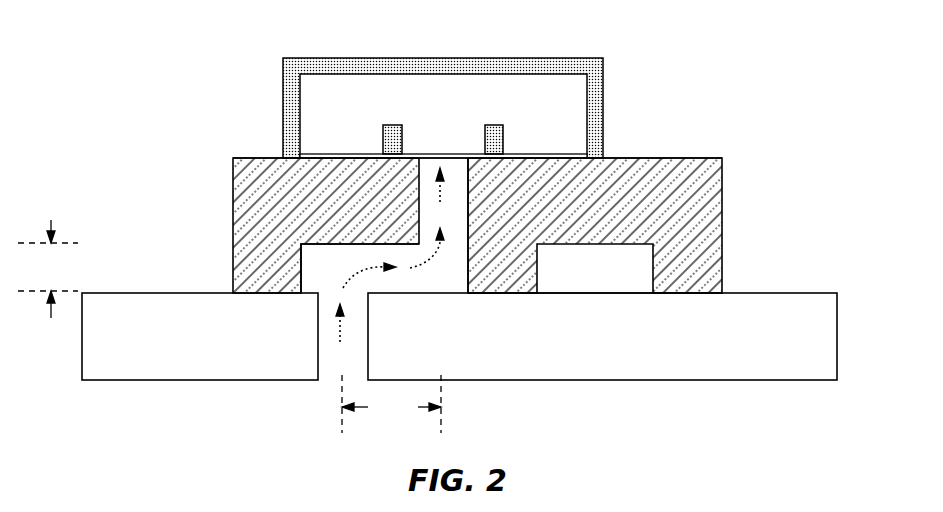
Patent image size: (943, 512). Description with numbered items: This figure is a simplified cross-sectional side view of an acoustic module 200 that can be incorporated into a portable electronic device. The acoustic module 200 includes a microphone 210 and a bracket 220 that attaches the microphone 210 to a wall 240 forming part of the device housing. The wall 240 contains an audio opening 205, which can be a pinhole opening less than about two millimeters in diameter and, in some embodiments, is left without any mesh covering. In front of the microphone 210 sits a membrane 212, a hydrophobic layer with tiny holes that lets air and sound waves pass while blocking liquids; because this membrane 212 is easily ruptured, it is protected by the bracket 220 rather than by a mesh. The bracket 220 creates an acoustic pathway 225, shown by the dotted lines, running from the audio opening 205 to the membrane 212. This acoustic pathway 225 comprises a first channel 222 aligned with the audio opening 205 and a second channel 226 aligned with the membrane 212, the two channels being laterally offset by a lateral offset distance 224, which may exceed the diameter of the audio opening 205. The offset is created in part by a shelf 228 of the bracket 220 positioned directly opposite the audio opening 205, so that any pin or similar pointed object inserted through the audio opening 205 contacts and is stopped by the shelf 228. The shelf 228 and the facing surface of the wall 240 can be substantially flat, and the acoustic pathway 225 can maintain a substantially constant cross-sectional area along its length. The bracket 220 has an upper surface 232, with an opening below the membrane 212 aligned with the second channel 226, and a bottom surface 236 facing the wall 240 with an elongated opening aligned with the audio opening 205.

The acoustic module 200 is at (437, 216).
The audio opening 205 is at (328, 370).
The microphone 210 is at (458, 79).
The membrane 212 is at (443, 125).
The bracket 220 is at (483, 226).
The first channel 222 is at (380, 318).
The lateral offset distance 224 is at (391, 404).
The acoustic pathway 225 is at (464, 251).
The second channel 226 is at (529, 246).
The shelf 228 is at (320, 256).
The upper surface 232 is at (489, 128).
The bottom surface 236 is at (617, 323).
The wall 240 is at (612, 305).